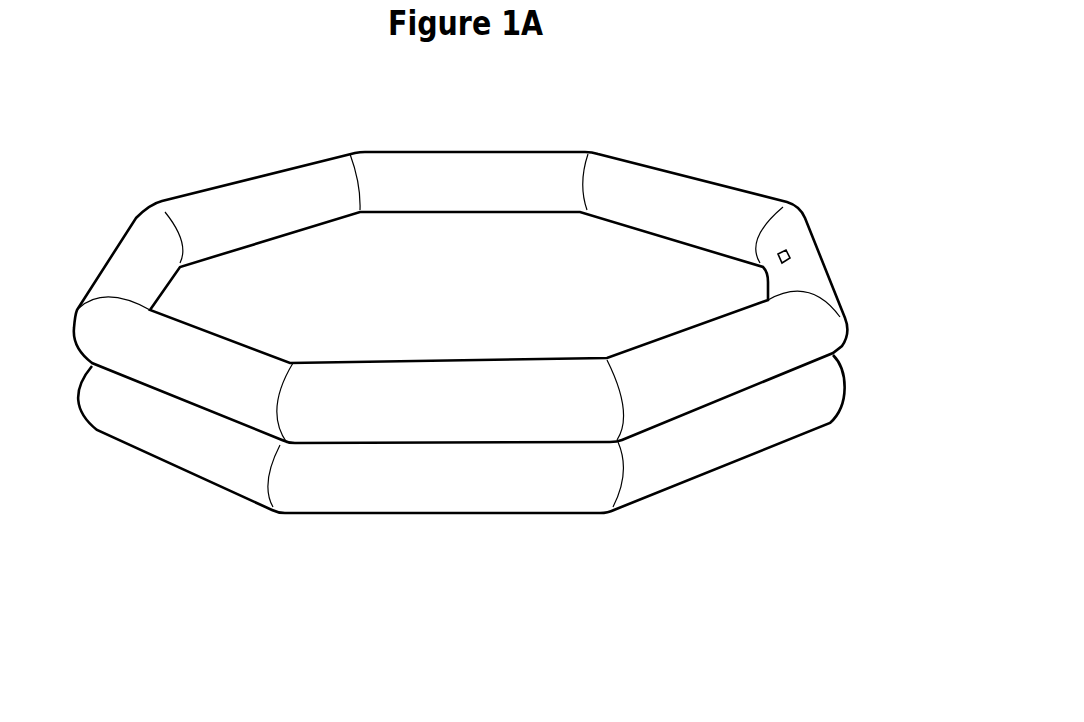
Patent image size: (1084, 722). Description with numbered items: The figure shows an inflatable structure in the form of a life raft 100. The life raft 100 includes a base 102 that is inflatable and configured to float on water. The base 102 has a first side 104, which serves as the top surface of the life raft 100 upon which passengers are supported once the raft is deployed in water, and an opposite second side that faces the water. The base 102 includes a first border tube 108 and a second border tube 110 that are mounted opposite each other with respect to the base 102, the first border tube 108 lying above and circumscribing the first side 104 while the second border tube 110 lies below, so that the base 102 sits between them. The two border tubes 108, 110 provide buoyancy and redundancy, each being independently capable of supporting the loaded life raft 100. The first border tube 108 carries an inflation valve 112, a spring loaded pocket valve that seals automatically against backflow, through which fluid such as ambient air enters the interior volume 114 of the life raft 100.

The life raft 100 is at (598, 124).
The base 102 is at (725, 398).
The first side 104 is at (574, 304).
The first border tube 108 is at (500, 398).
The second border tube 110 is at (442, 483).
The inflation valve 112 is at (789, 254).
The interior volume 114 is at (782, 355).